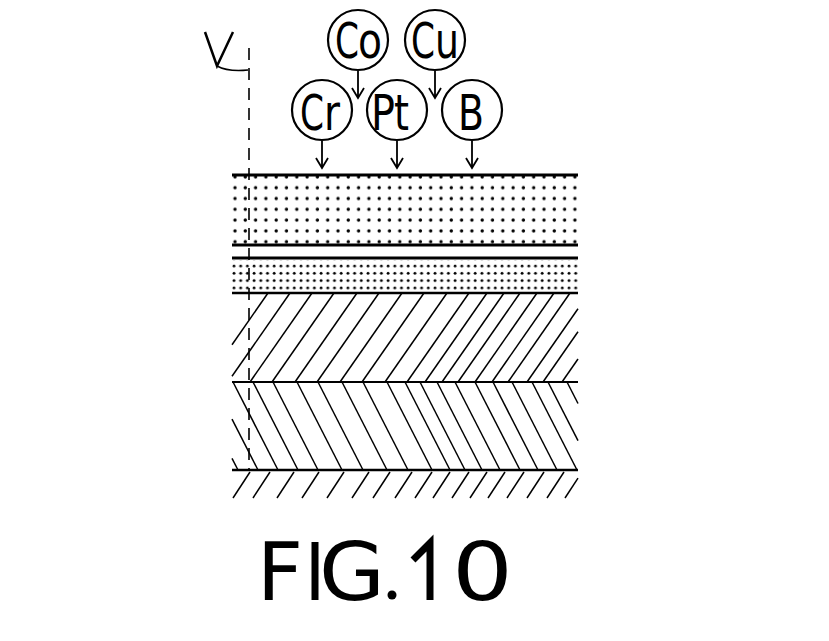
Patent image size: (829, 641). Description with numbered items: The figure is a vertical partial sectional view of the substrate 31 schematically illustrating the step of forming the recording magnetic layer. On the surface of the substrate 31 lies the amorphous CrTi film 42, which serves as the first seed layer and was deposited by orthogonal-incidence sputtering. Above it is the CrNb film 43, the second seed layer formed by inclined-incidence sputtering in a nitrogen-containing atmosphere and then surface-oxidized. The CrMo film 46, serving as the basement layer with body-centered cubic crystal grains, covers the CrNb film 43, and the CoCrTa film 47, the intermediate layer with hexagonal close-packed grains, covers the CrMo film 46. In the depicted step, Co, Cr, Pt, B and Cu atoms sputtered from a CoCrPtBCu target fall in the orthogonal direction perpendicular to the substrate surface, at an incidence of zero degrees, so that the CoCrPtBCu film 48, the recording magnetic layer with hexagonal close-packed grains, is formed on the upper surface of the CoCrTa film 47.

The CoCrPtBCu film 48 is at (540, 175).
The CoCrTa film 47 is at (250, 244).
The CrMo film 46 is at (538, 258).
The CrNb film 43 is at (250, 294).
The CrTi film 42 is at (250, 383).
The substrate 31 is at (560, 470).